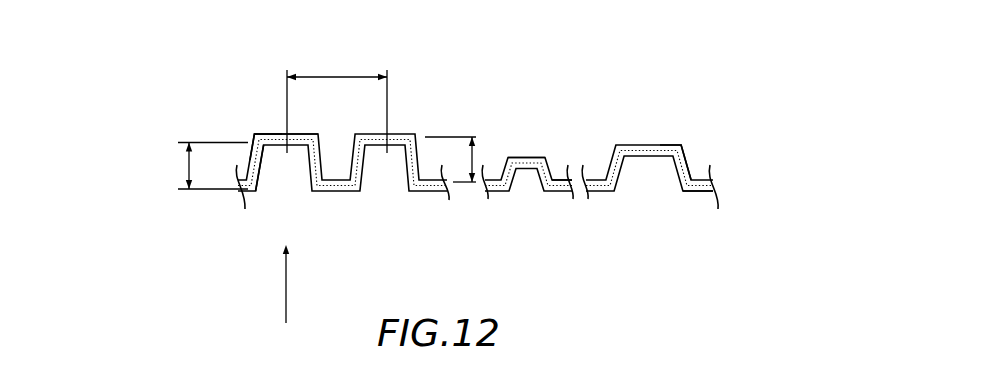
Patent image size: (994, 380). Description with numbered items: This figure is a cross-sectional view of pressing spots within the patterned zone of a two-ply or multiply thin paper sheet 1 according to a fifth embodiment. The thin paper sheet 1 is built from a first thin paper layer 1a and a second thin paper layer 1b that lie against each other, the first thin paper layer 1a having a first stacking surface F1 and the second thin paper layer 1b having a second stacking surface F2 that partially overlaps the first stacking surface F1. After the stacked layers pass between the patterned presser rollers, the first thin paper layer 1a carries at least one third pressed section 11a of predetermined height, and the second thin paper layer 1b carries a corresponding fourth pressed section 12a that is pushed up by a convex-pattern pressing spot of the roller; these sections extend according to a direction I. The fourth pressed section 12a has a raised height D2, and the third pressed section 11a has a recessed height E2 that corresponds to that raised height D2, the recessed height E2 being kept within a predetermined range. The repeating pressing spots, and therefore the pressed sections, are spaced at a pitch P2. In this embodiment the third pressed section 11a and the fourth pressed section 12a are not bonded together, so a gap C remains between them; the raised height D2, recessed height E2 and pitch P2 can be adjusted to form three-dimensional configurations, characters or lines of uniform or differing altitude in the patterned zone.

The thin paper sheet 1 is at (722, 182).
The first thin paper layer 1a is at (699, 160).
The second thin paper layer 1b is at (699, 204).
The third pressed section 11a is at (246, 131).
The fourth pressed section 12a is at (270, 179).
The gap C is at (262, 133).
The pitch P2 is at (340, 75).
The raised height D2 is at (188, 168).
The recessed height E2 is at (473, 158).
The second stacking surface F2 is at (525, 157).
The first stacking surface F1 is at (556, 178).
The direction I is at (287, 288).